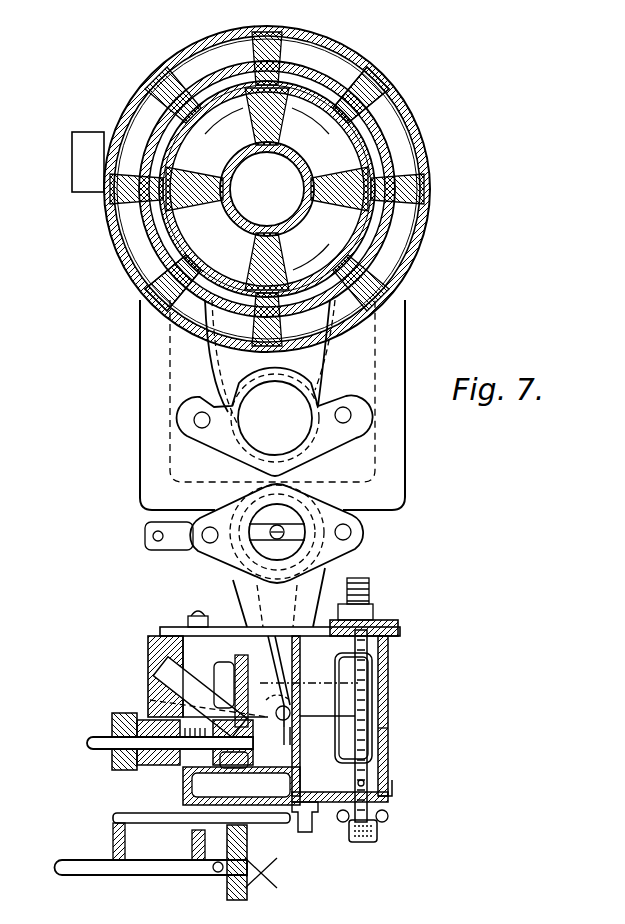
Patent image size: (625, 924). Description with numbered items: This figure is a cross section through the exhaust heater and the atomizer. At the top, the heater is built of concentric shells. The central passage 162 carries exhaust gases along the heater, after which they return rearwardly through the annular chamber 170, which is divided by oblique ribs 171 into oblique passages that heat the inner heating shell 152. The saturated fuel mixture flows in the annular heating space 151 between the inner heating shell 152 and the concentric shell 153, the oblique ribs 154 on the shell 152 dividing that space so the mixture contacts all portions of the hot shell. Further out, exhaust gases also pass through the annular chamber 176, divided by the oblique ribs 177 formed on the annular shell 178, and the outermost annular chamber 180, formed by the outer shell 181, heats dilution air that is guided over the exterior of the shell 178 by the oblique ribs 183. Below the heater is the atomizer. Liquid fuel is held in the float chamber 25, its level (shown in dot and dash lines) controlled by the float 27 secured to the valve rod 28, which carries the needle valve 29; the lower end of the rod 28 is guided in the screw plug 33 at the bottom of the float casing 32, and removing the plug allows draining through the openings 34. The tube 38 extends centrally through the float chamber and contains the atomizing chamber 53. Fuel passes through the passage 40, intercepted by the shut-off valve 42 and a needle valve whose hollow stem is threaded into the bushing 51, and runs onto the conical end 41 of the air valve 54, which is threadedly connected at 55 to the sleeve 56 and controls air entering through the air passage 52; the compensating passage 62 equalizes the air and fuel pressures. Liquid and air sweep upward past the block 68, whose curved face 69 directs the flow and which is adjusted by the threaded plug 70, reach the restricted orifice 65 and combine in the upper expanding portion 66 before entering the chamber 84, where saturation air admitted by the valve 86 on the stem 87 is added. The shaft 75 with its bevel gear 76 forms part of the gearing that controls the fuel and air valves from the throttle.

The annular chamber 180 is at (307, 50).
The outer shell 181 is at (356, 64).
The oblique ribs 183 is at (362, 91).
The oblique ribs 177 is at (386, 146).
The annular shell 178 is at (385, 221).
The annular chamber 176 is at (380, 243).
The annular heating space 151 is at (200, 214).
The concentric shell 153 is at (172, 226).
The oblique ribs 154 is at (170, 266).
The inner heating shell 152 is at (228, 132).
The central passage 162 is at (267, 189).
The annular chamber 170 is at (267, 182).
The oblique ribs 171 is at (274, 252).
The valve 86 is at (268, 512).
The stem 87 is at (185, 531).
The chamber 84 is at (262, 588).
The compensating passage 62 is at (224, 637).
The needle valve 29 is at (368, 603).
The upper expanding portion 66 is at (282, 638).
The air passage 52 is at (156, 662).
The bushing 51 is at (175, 690).
The passage 40 is at (262, 698).
The shut-off valve 42 is at (290, 712).
The threaded connection 55 is at (185, 740).
The sleeve 56 is at (160, 760).
The float chamber 25 is at (184, 774).
The air valve 54 is at (232, 773).
The float 27 is at (328, 758).
The tube 38 is at (358, 697).
The valve rod 28 is at (368, 708).
The restricted orifice 65 is at (298, 692).
The atomizing chamber 53 is at (300, 716).
The curved face 69 is at (380, 728).
The block 68 is at (286, 745).
The float casing 32 is at (389, 797).
The openings 34 is at (388, 815).
The screw plug 33 is at (378, 840).
The conical end 41 is at (228, 822).
The threaded plug 70 is at (287, 805).
The shaft 75 is at (88, 870).
The bevel gear 76 is at (230, 884).